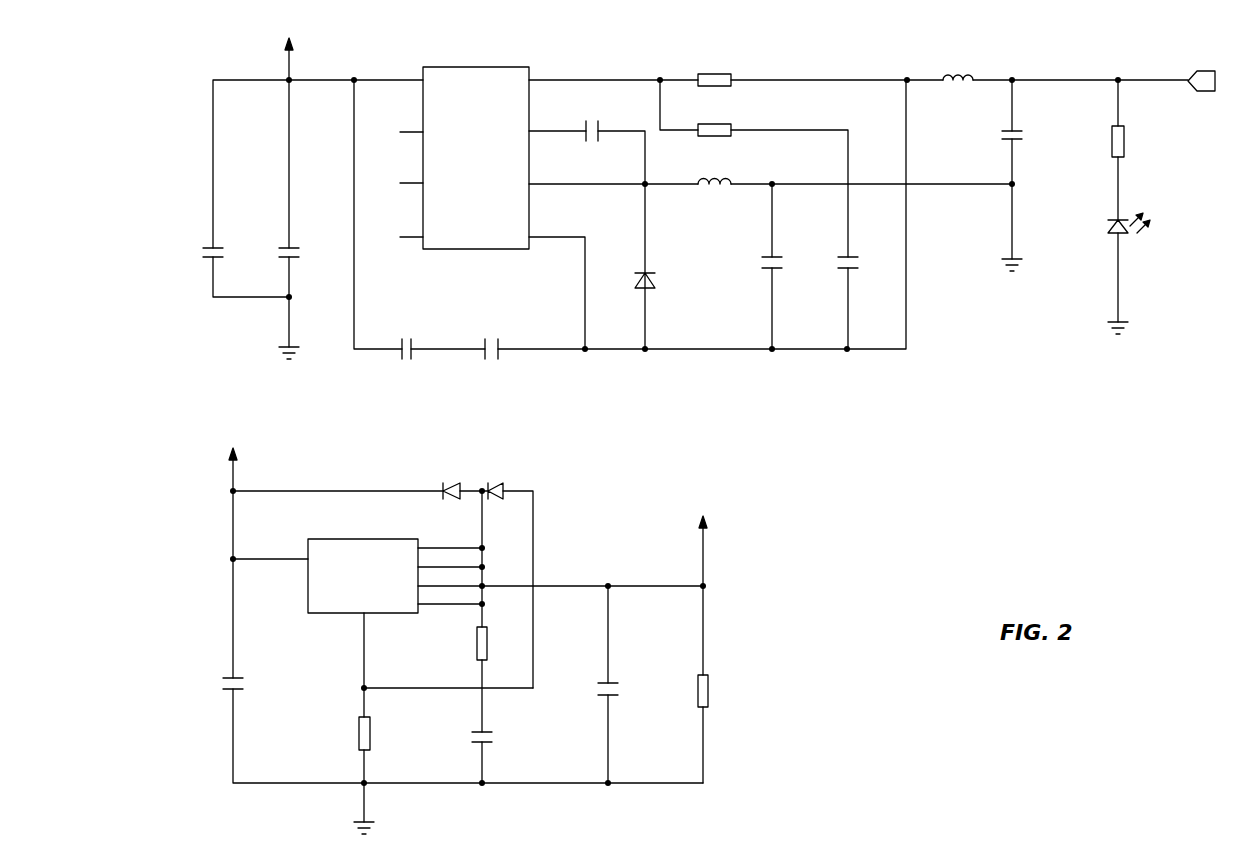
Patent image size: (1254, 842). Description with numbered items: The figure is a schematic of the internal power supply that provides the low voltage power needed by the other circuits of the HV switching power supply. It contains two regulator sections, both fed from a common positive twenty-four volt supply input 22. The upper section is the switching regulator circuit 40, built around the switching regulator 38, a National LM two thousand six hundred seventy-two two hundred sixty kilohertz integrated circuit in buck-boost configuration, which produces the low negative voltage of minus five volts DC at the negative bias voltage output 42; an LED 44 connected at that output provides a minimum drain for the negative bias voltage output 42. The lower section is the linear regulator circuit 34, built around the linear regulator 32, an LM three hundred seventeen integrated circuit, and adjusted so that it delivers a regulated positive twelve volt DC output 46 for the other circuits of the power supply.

The switching regulator circuit 40 is at (706, 193).
The +24V supply input 22 is at (278, 253).
The switching regulator 38 is at (462, 157).
The negative bias voltage output 42 is at (1221, 97).
The LED 44 is at (1104, 268).
The linear regulator circuit 34 is at (463, 611).
The linear regulator 32 is at (356, 575).
The +12V DC output 46 is at (721, 542).